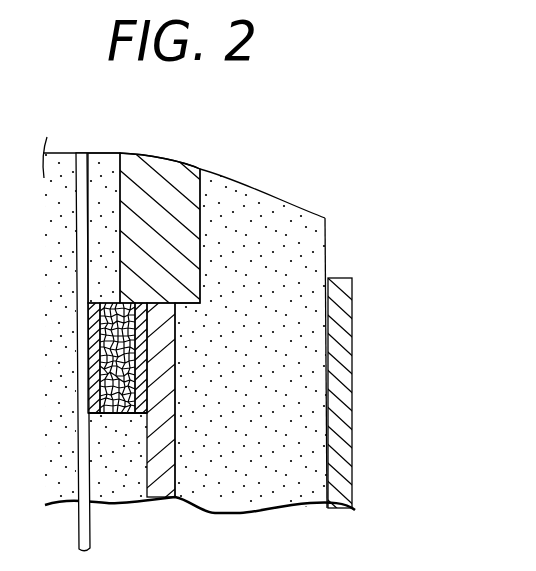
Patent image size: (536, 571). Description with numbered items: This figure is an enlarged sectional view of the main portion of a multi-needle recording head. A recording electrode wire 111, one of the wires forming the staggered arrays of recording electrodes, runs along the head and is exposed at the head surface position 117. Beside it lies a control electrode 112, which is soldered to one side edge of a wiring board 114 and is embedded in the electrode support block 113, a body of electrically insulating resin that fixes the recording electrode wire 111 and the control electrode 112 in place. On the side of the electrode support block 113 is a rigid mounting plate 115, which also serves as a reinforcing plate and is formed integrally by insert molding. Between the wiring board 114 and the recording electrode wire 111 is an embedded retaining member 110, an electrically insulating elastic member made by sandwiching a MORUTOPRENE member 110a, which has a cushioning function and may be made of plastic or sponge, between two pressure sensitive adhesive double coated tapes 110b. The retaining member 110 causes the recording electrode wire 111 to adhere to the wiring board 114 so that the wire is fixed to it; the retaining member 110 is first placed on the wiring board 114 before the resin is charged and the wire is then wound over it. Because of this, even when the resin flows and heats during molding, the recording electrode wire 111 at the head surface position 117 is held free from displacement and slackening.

The retaining member 110 is at (282, 375).
The MORUTOPRENE member 110a is at (103, 373).
The pressure sensitive adhesive double coated tape 110b is at (140, 343).
The recording electrode wire 111 is at (78, 166).
The control electrode 112 is at (184, 172).
The electrode support block 113 is at (285, 216).
The wiring board 114 is at (160, 478).
The mounting plate 115 is at (343, 292).
The head surface position 117 is at (106, 152).